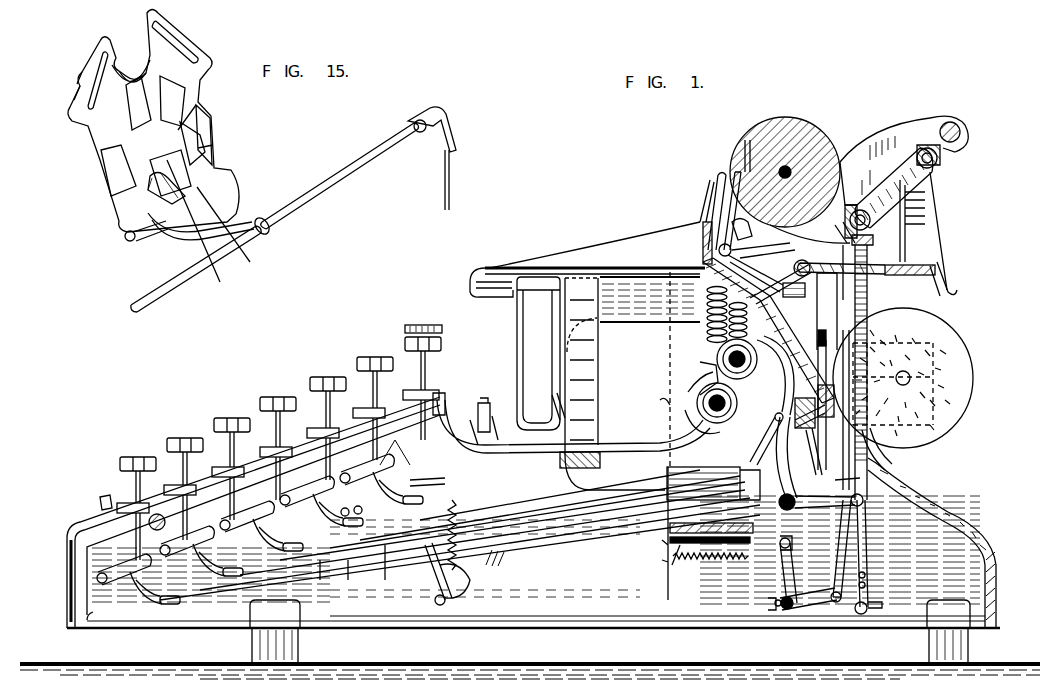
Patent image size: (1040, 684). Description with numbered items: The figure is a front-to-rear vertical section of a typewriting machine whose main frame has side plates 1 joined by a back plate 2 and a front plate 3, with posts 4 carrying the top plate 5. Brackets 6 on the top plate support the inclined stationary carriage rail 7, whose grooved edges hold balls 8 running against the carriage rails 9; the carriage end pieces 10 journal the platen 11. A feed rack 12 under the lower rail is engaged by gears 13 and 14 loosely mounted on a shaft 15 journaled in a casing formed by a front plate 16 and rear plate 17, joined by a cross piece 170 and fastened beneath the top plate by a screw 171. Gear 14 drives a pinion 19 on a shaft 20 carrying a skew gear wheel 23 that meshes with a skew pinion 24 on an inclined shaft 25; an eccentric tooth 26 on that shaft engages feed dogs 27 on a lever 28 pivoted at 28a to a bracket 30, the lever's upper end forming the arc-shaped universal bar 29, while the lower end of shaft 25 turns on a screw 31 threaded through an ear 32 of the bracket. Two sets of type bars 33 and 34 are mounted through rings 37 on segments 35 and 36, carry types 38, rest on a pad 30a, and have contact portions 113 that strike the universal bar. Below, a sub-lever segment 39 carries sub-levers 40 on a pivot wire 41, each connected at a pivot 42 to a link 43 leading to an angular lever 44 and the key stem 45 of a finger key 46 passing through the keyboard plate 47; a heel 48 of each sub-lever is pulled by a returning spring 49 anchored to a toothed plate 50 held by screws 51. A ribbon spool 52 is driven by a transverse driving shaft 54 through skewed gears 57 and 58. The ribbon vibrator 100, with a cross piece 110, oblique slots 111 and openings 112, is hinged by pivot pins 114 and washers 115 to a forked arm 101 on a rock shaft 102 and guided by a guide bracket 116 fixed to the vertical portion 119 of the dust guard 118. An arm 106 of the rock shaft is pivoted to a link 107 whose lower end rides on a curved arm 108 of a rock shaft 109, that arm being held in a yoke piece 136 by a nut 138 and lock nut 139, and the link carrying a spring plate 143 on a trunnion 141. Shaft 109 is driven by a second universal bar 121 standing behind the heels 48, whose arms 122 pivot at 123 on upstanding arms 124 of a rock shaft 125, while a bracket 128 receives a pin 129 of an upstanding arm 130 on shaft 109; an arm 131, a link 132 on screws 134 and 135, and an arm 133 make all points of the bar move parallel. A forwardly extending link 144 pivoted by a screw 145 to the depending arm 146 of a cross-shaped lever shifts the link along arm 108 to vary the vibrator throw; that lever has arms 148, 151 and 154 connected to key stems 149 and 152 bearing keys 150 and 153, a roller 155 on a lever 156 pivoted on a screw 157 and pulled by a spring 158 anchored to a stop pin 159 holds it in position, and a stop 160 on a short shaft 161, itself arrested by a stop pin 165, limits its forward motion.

In FIG. 1, the side plates 1 is at (627, 626).
In FIG. 1, the back plate 2 is at (941, 508).
In FIG. 1, the front plate 3 is at (67, 588).
In FIG. 1, the posts 4 is at (517, 336).
In FIG. 1, the top plate 5 is at (528, 266).
In FIG. 1, the posts or brackets 6 is at (934, 224).
In FIG. 1, the carriage rail 7 is at (880, 205).
In FIG. 1, the anti-friction balls or rollers 8 is at (934, 168).
In FIG. 1, the rails 9 is at (926, 150).
In FIG. 1, the end pieces 10 is at (878, 150).
In FIG. 1, the platen 11 is at (788, 118).
In FIG. 1, the feed rack 12 is at (846, 243).
In FIG. 1, the gear 13 is at (855, 258).
In FIG. 1, the gear wheel 14 is at (869, 253).
In FIG. 1, the shaft 15 is at (827, 334).
In FIG. 1, the front plate 16 is at (812, 424).
In FIG. 1, the rear plate 17 is at (923, 414).
In FIG. 1, the pinion 19 is at (884, 410).
In FIG. 1, the shaft 20 is at (834, 395).
In FIG. 1, the gear wheel 23 is at (850, 360).
In FIG. 1, the skew pinion 24 is at (836, 396).
In FIG. 1, the shaft 25 is at (800, 360).
In FIG. 1, the eccentric tooth 26 is at (770, 270).
In FIG. 1, the feed dogs 27 is at (745, 268).
In FIG. 15, the arm or lever 28 is at (145, 110).
In FIG. 1, the arm or lever 28 is at (712, 206).
In FIG. 15, the pivot 28a is at (150, 170).
In FIG. 1, the pivot 28a is at (752, 245).
In FIG. 15, the universal bar 29 is at (138, 55).
In FIG. 1, the universal bar 29 is at (708, 185).
In FIG. 15, the bracket or frame 30 is at (176, 240).
In FIG. 1, the bracket or frame 30 is at (780, 272).
In FIG. 1, the pad or cushion 30a is at (598, 375).
In FIG. 1, the screw 31 is at (843, 478).
In FIG. 1, the ear 32 is at (830, 470).
In FIG. 1, the type bars 33 is at (532, 450).
In FIG. 1, the type bars 34 is at (700, 366).
In FIG. 1, the segment 35 is at (716, 424).
In FIG. 1, the segment 36 is at (724, 352).
In FIG. 1, the rings 37 is at (698, 378).
In FIG. 1, the type 38 is at (492, 400).
In FIG. 1, the sub-lever segment 39 is at (690, 467).
In FIG. 1, the sub-levers 40 is at (740, 470).
In FIG. 1, the pivot wire 41 is at (786, 372).
In FIG. 1, the pivot 42 is at (776, 470).
In FIG. 1, the link 43 is at (460, 535).
In FIG. 1, the angular lever 44 is at (172, 574).
In FIG. 1, the key stem 45 is at (196, 470).
In FIG. 1, the finger-key 46 is at (214, 426).
In FIG. 1, the keyboard plate 47 is at (118, 510).
In FIG. 1, the heel 48 is at (752, 548).
In FIG. 1, the returning spring 49 is at (690, 558).
In FIG. 1, the toothed plate 50 is at (668, 483).
In FIG. 1, the screws 51 is at (663, 398).
In FIG. 1, the ribbon spool 52 is at (958, 342).
In FIG. 1, the driving shaft 54 is at (912, 378).
In FIG. 1, the skewed gear 57 is at (906, 386).
In FIG. 1, the skewed gear 58 is at (870, 368).
In FIG. 15, the ribbon vibrator 100 is at (105, 171).
In FIG. 1, the ribbon vibrator 100 is at (745, 170).
In FIG. 15, the arm 101 is at (238, 215).
In FIG. 1, the arm 101 is at (805, 262).
In FIG. 15, the rock shaft 102 is at (352, 165).
In FIG. 1, the rock shaft 102 is at (792, 290).
In FIG. 15, the arm 106 is at (430, 138).
In FIG. 1, the arm 106 is at (826, 270).
In FIG. 15, the link 107 is at (447, 187).
In FIG. 1, the link 107 is at (834, 312).
In FIG. 1, the arm 108 is at (875, 612).
In FIG. 1, the rock shaft 109 is at (786, 614).
In FIG. 15, the cross piece 110 is at (182, 120).
In FIG. 15, the oblique slot 111 is at (80, 103).
In FIG. 15, the opening 112 is at (92, 70).
In FIG. 1, the abutment or contact portion 113 is at (590, 420).
In FIG. 15, the pivot pins 114 is at (124, 240).
In FIG. 15, the washers 115 is at (130, 241).
In FIG. 1, the guide bracket 116 is at (724, 200).
In FIG. 1, the dust guard 118 is at (706, 300).
In FIG. 1, the vertical portion 119 is at (703, 256).
In FIG. 1, the universal bar 121 is at (790, 560).
In FIG. 1, the arm 122 is at (793, 420).
In FIG. 1, the pivot 123 is at (800, 425).
In FIG. 1, the upstanding arm 124 is at (814, 440).
In FIG. 1, the rock shaft 125 is at (800, 510).
In FIG. 1, the arm or bracket 128 is at (790, 542).
In FIG. 1, the pin 129 is at (786, 550).
In FIG. 1, the upstanding arm 130 is at (778, 575).
In FIG. 1, the arm 131 is at (824, 606).
In FIG. 1, the link 132 is at (838, 540).
In FIG. 1, the arm 133 is at (866, 506).
In FIG. 1, the screw 134 is at (845, 605).
In FIG. 1, the screw 135 is at (868, 495).
In FIG. 1, the yoke-piece 136 is at (783, 610).
In FIG. 1, the nut 138 is at (774, 606).
In FIG. 1, the lock nut 139 is at (766, 606).
In FIG. 1, the trunnion 141 is at (866, 606).
In FIG. 1, the spring plate 143 is at (868, 580).
In FIG. 1, the link 144 is at (607, 586).
In FIG. 1, the screw 145 is at (440, 604).
In FIG. 1, the depending arm 146 is at (424, 568).
In FIG. 1, the rearwardly extending arm 148 is at (448, 490).
In FIG. 1, the key stem 149 is at (440, 404).
In FIG. 1, the key 150 is at (438, 326).
In FIG. 1, the forwardly extending arm 151 is at (360, 515).
In FIG. 1, the stem 152 is at (335, 530).
In FIG. 1, the key 153 is at (392, 372).
In FIG. 1, the upwardly extending arm 154 is at (392, 462).
In FIG. 1, the pin or roller 155 is at (430, 455).
In FIG. 1, the lever 156 is at (430, 484).
In FIG. 1, the screw 157 is at (310, 428).
In FIG. 1, the spring 158 is at (452, 565).
In FIG. 1, the stop-pin 159 is at (446, 590).
In FIG. 1, the stop 160 is at (385, 580).
In FIG. 1, the short shaft 161 is at (322, 566).
In FIG. 1, the stop pin 165 is at (348, 572).
In FIG. 1, the cross piece 170 is at (896, 340).
In FIG. 1, the screw 171 is at (900, 267).